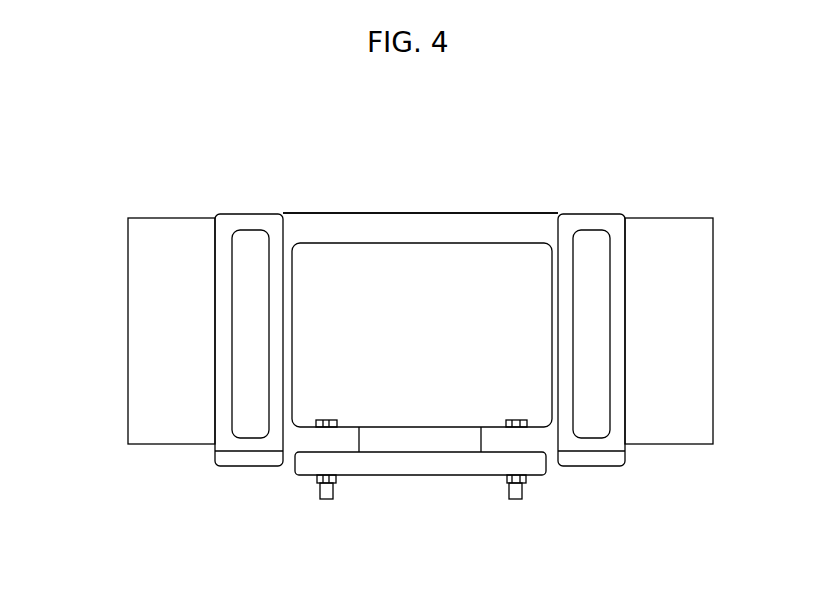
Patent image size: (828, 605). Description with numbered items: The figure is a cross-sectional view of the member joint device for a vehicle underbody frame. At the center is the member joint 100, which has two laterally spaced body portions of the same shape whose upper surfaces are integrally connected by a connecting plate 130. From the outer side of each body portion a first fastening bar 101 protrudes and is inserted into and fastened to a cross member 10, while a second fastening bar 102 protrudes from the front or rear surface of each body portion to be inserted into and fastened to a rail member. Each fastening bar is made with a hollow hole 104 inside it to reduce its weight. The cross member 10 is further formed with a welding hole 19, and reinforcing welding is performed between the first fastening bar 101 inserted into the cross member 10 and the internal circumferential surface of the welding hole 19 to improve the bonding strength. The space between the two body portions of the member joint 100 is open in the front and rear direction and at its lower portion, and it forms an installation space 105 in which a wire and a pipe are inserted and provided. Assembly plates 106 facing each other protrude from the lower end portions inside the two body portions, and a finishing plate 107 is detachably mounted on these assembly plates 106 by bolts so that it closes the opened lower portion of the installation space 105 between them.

The cross member 10 is at (52, 210).
The welding hole 19 is at (167, 252).
The member joint 100 is at (412, 192).
The first fastening bar 101 is at (177, 215).
The second fastening bar 102 is at (252, 223).
The hollow hole 104 is at (250, 417).
The installation space 105 is at (358, 268).
The assembly plate 106 is at (343, 439).
The finishing plate 107 is at (417, 465).
The connecting plate 130 is at (487, 222).